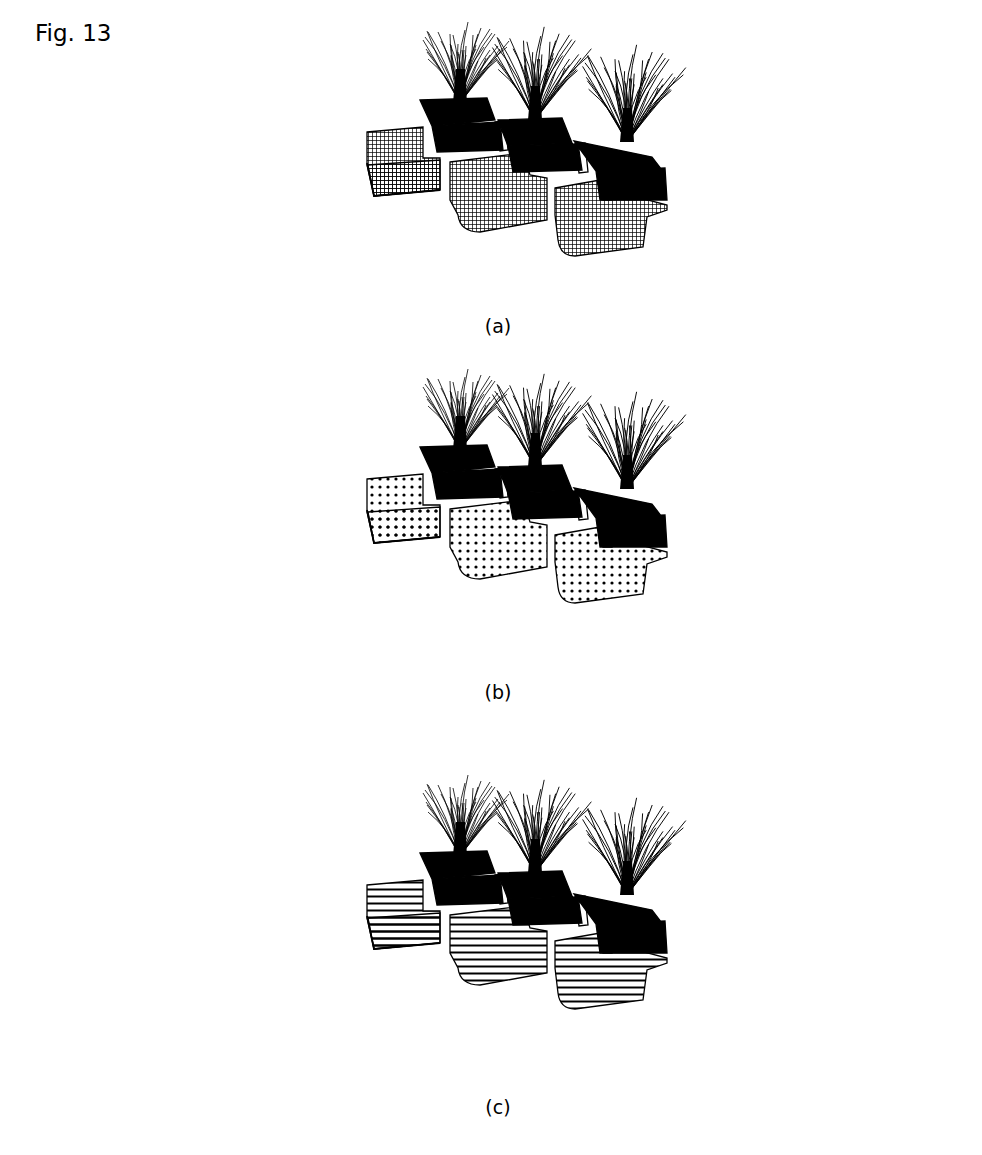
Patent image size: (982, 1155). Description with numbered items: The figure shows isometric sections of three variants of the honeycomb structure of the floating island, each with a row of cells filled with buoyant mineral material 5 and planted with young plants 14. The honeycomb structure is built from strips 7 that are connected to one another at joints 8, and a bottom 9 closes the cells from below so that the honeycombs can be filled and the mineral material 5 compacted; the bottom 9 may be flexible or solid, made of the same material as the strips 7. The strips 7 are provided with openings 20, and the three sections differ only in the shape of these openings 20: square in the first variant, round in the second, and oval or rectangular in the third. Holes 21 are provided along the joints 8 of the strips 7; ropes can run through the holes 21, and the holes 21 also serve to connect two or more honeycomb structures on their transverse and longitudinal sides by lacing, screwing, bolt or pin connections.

The buoyant mineral material 5 is at (641, 150).
The strips 7 is at (382, 128).
The joints 8 is at (614, 182).
The bottom 9 is at (583, 215).
The young plants 14 is at (636, 118).
The openings 20 is at (422, 178).
The holes 21 is at (373, 186).